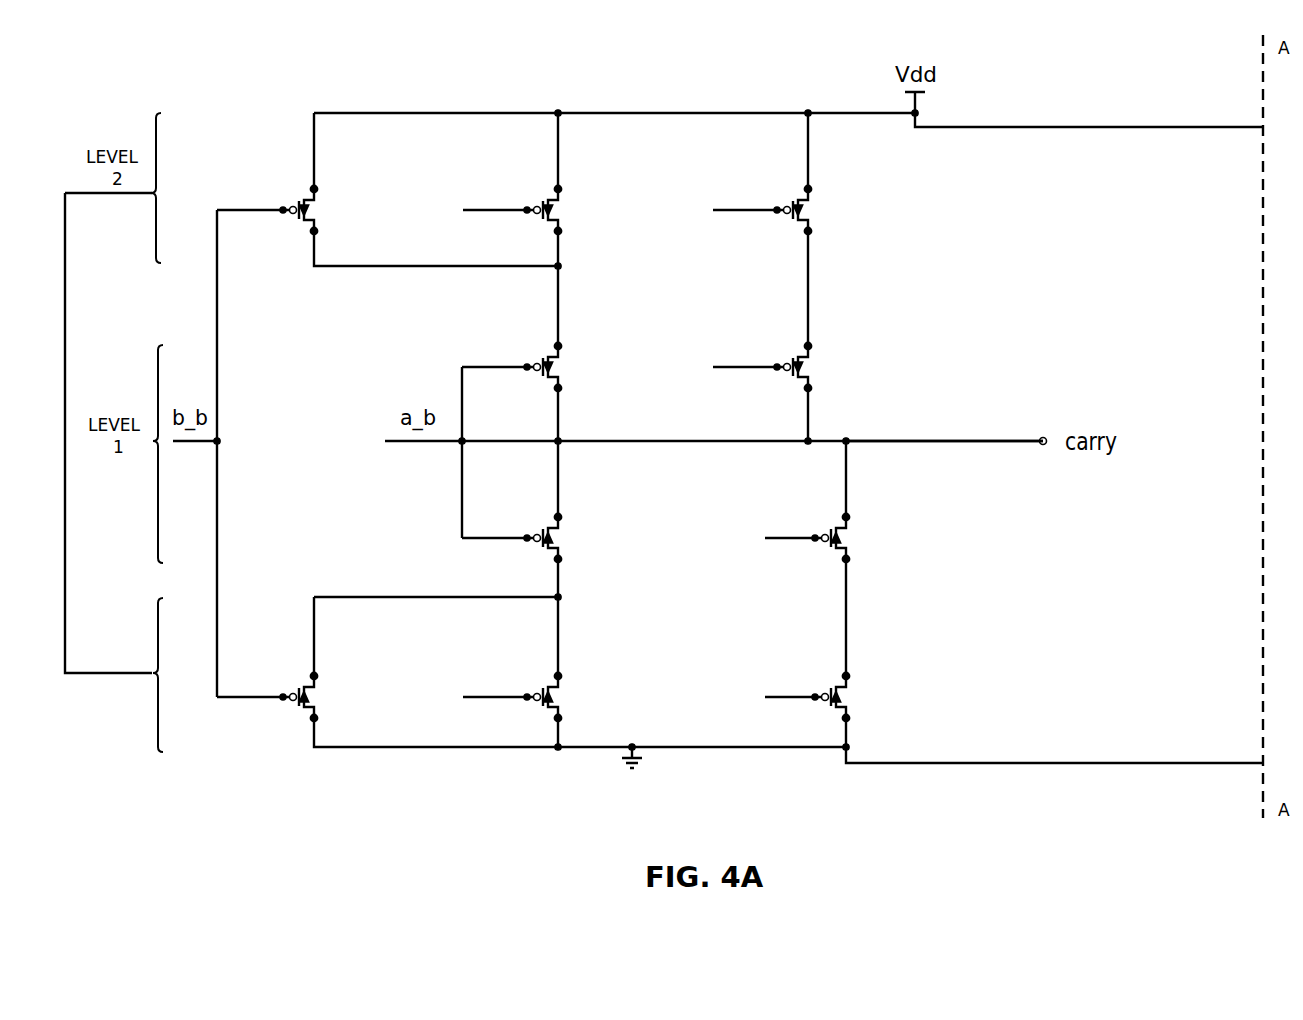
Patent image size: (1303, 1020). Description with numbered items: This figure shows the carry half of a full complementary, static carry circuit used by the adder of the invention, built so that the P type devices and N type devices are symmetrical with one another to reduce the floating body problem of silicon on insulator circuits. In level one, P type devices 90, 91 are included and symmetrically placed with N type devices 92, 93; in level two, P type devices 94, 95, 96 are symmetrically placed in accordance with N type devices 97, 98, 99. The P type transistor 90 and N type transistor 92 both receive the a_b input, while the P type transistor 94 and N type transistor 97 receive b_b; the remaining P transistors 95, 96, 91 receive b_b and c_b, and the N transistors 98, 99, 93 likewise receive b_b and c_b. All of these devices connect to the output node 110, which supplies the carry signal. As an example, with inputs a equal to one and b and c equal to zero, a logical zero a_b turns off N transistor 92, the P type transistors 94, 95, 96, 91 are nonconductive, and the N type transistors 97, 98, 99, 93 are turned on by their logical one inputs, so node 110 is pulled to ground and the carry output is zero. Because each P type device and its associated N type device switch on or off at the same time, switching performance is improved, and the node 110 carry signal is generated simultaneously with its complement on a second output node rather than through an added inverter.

The P type device 90 is at (526, 330).
The P type device 91 is at (776, 330).
The N type device 92 is at (526, 500).
The N type device 93 is at (813, 500).
The P type device 94 is at (283, 222).
The P type device 95 is at (523, 172).
The P type device 96 is at (773, 172).
The N type device 97 is at (285, 660).
The N type device 98 is at (525, 660).
The N type device 99 is at (815, 660).
The node 110 is at (990, 443).